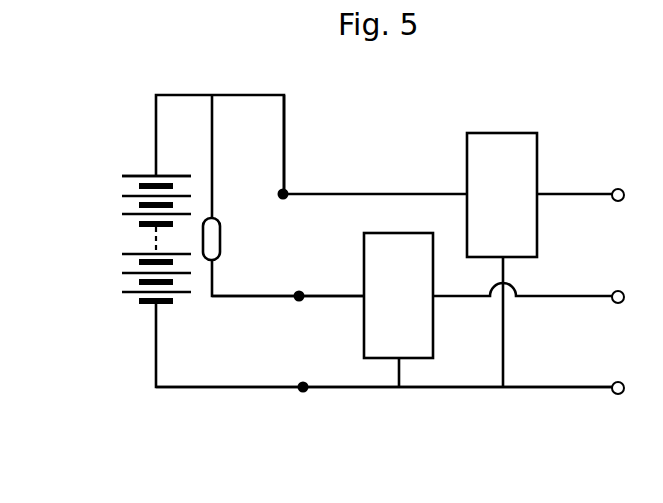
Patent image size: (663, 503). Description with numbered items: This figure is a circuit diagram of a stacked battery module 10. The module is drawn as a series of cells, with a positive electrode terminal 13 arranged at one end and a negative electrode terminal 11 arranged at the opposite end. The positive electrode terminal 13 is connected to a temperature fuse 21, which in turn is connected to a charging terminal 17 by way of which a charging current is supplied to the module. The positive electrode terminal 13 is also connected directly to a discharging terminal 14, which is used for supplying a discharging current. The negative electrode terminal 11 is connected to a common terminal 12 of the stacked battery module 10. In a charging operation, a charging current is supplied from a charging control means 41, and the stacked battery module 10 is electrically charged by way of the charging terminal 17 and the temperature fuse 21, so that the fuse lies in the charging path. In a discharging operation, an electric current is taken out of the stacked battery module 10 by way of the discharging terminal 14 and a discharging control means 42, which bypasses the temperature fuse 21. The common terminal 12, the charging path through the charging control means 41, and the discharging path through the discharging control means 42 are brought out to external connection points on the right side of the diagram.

The stacked battery module 10 is at (106, 239).
The negative electrode terminal 11 is at (155, 305).
The common terminal 12 is at (298, 397).
The positive electrode terminal 13 is at (153, 169).
The discharging terminal 14 is at (280, 190).
The charging terminal 17 is at (302, 280).
The temperature fuse 21 is at (222, 242).
The charging control means 41 is at (398, 295).
The discharging control means 42 is at (502, 195).